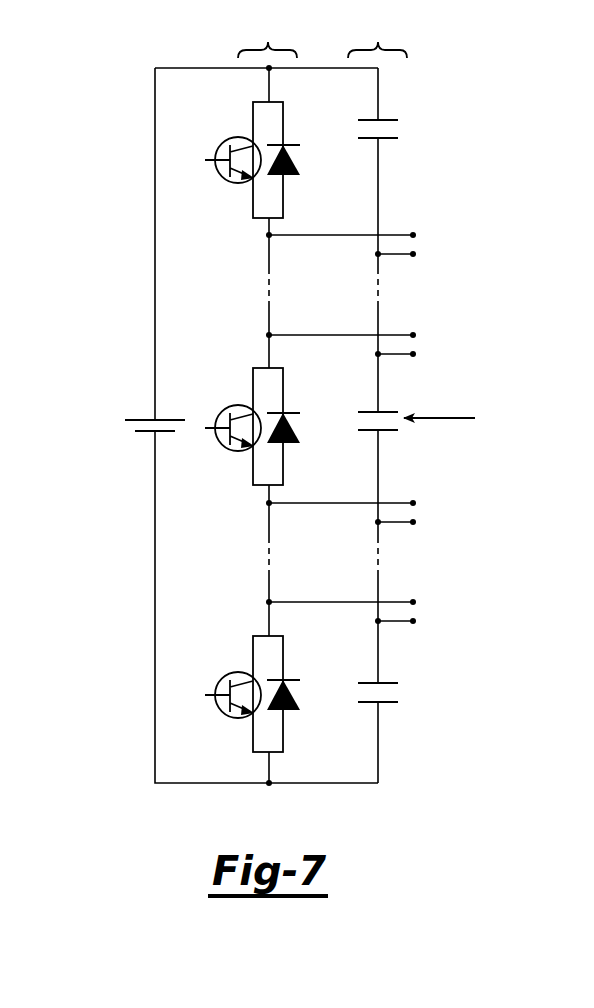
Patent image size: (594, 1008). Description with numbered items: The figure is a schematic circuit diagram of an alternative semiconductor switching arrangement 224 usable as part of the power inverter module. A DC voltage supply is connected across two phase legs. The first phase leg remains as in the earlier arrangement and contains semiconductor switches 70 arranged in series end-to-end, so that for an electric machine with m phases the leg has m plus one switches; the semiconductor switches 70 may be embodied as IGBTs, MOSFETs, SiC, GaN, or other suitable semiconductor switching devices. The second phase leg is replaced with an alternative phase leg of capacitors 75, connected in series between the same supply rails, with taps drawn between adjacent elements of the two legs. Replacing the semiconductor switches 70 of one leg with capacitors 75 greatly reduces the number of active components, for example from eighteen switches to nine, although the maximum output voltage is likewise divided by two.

The semiconductor switching arrangement 224 is at (349, 402).
The semiconductor switches 70 is at (229, 199).
The capacitors 75 is at (404, 153).